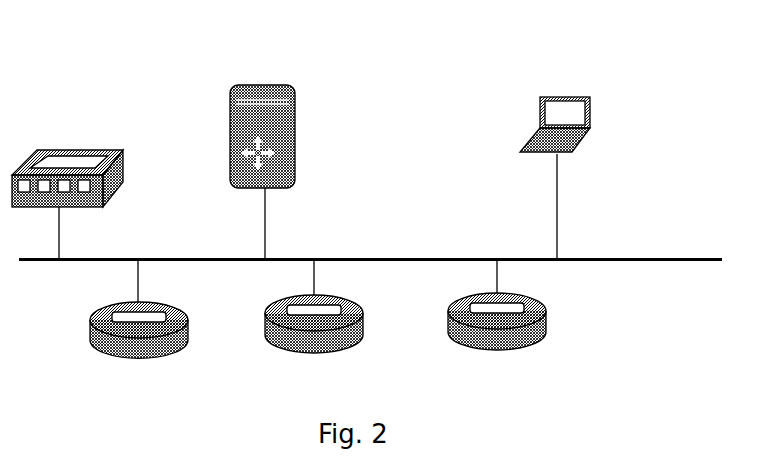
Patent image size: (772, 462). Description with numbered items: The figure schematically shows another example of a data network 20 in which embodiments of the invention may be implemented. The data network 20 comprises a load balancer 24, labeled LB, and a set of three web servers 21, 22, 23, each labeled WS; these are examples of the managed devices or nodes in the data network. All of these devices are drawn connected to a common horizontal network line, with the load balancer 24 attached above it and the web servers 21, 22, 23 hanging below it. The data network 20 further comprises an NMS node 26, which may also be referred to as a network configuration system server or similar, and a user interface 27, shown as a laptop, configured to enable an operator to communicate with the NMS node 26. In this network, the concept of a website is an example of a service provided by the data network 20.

The data network 20 is at (100, 48).
The web server 21 is at (100, 353).
The web server 22 is at (273, 345).
The web server 23 is at (462, 345).
The load balancer 24 is at (88, 148).
The NMS node 26 is at (295, 96).
The user interface 27 is at (590, 127).